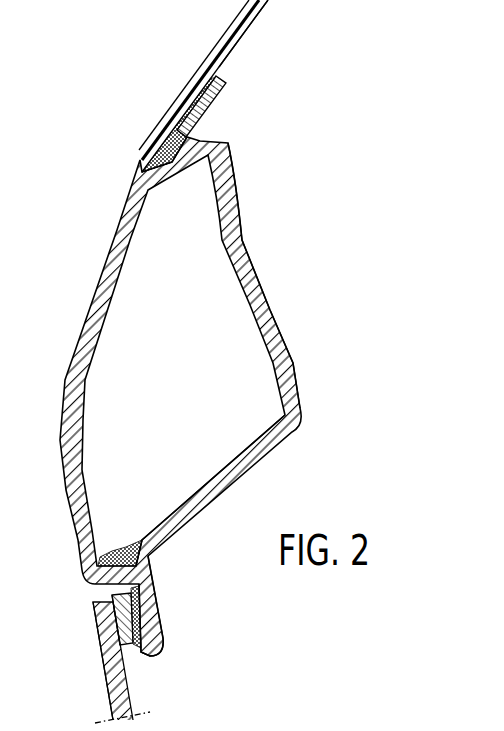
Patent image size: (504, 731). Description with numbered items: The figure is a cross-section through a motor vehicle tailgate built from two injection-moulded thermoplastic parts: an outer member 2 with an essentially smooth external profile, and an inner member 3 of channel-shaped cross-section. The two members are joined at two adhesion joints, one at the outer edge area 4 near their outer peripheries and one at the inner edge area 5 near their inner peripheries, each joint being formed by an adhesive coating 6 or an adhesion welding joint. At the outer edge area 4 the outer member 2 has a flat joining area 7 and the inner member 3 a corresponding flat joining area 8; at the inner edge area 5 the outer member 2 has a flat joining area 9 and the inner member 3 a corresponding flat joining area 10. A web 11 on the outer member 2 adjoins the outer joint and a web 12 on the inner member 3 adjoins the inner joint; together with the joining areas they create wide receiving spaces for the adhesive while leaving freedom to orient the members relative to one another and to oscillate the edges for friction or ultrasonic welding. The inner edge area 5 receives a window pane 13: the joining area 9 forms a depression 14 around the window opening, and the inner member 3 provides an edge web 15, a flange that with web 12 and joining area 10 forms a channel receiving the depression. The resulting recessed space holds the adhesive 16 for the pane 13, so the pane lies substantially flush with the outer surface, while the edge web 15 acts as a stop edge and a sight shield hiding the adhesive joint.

The outer member 2 is at (100, 311).
The inner member 3 is at (268, 335).
The outer edge area 4 is at (219, 68).
The inner edge area 5 is at (103, 660).
The adhesive coating 6 is at (176, 111).
The flat joining area 7 is at (193, 76).
The flat joining area 8 is at (203, 111).
The flat joining area 9 is at (113, 607).
The flat joining area 10 is at (147, 575).
The web 11 is at (158, 183).
The web 12 is at (122, 552).
The window pane 13 is at (115, 700).
The depression 14 is at (90, 570).
The edge web 15 is at (132, 658).
The adhesive 16 is at (115, 635).